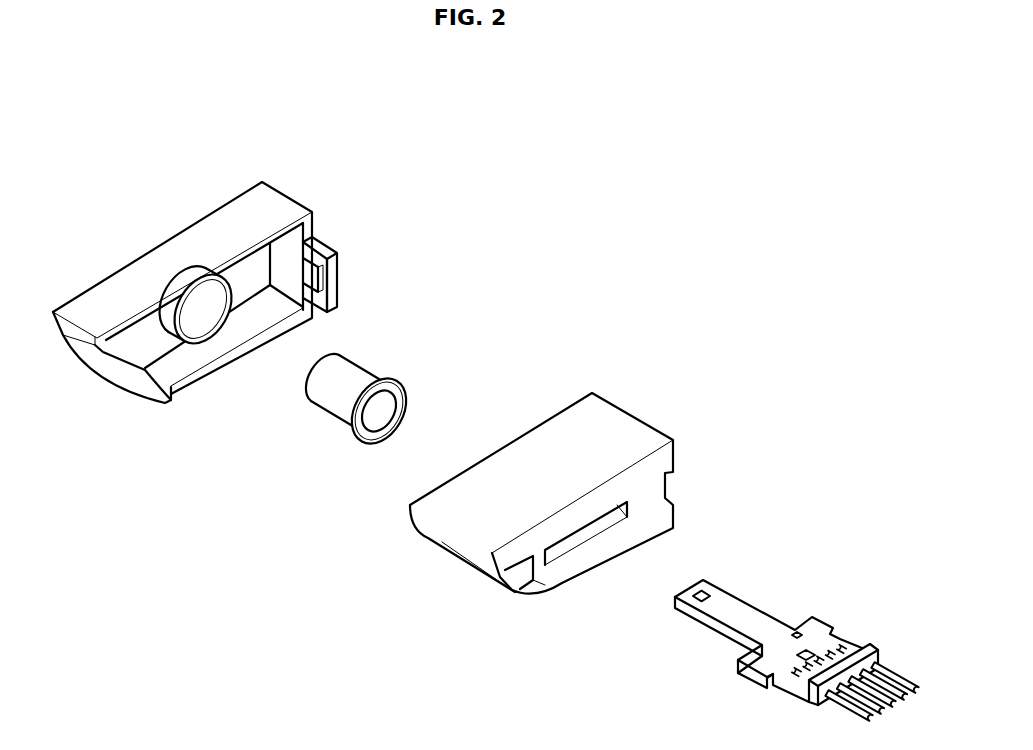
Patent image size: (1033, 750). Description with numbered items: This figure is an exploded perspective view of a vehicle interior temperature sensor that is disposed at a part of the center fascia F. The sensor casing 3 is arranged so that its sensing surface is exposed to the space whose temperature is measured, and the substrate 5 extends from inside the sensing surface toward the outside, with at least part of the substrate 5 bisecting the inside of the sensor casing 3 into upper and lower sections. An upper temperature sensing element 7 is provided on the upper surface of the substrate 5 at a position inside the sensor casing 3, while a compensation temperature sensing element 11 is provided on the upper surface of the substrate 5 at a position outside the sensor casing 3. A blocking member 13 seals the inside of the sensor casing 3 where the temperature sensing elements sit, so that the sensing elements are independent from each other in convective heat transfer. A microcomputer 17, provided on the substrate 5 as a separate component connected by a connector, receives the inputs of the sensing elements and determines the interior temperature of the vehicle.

The center fascia F is at (278, 208).
The sensor casing 3 is at (353, 375).
The blocking member 13 is at (622, 433).
The substrate 5 is at (737, 680).
The upper temperature sensing element 7 is at (705, 585).
The microcomputer 17 is at (796, 632).
The compensation temperature sensing element 11 is at (808, 653).